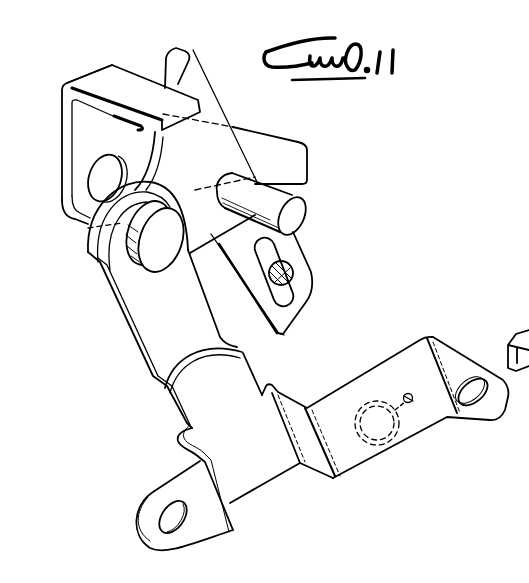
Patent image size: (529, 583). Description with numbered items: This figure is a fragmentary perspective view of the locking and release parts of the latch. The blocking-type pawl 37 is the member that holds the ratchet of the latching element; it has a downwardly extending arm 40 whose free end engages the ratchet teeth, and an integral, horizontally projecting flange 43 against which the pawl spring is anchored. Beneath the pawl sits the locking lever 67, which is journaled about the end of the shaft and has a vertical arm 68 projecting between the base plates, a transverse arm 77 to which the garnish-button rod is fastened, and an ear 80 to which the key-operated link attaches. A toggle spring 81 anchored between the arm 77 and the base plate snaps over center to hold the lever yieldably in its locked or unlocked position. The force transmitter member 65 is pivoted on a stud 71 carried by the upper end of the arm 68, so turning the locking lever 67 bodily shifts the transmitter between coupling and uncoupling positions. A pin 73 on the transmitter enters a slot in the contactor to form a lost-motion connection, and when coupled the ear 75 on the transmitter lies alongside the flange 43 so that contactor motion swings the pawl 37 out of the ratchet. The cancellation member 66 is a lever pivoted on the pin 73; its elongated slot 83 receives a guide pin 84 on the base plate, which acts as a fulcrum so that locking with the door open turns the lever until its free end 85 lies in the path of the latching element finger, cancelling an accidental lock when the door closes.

The pawl 37 is at (60, 157).
The arm 40 is at (284, 139).
The flange 43 is at (125, 75).
The force transmitter member 65 is at (206, 74).
The cancellation member 66 is at (309, 256).
The locking lever 67 is at (124, 311).
The vertical arm 68 is at (143, 322).
The stud 71 is at (164, 268).
The pin 73 is at (300, 204).
The ear 75 is at (190, 57).
The arm 77 is at (405, 366).
The ear 80 is at (170, 497).
The toggle spring 81 is at (380, 446).
The elongated slot 83 is at (296, 288).
The guide pin 84 is at (297, 275).
The free end 85 is at (285, 336).